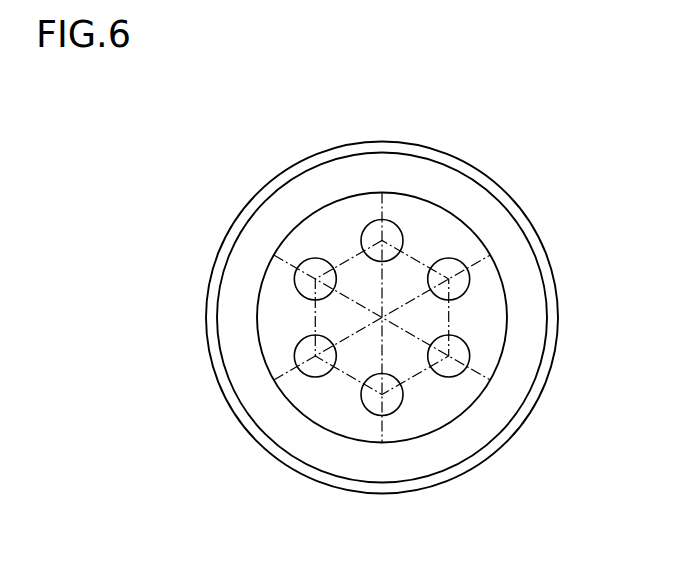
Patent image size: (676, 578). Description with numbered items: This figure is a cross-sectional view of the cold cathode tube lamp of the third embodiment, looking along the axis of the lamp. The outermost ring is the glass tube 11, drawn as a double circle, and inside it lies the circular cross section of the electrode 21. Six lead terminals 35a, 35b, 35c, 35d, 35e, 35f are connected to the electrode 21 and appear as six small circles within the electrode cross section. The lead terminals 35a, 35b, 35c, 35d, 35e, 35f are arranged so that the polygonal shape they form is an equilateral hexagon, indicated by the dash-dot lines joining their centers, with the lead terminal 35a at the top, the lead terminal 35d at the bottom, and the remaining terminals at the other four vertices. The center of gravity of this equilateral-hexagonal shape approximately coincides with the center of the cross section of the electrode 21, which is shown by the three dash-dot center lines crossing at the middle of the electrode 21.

The glass tube 11 is at (453, 165).
The electrode 21 is at (327, 226).
The lead terminal 35a is at (382, 240).
The lead terminal 35b is at (316, 279).
The lead terminal 35c is at (316, 356).
The lead terminal 35d is at (382, 395).
The lead terminal 35e is at (449, 356).
The lead terminal 35f is at (449, 278).